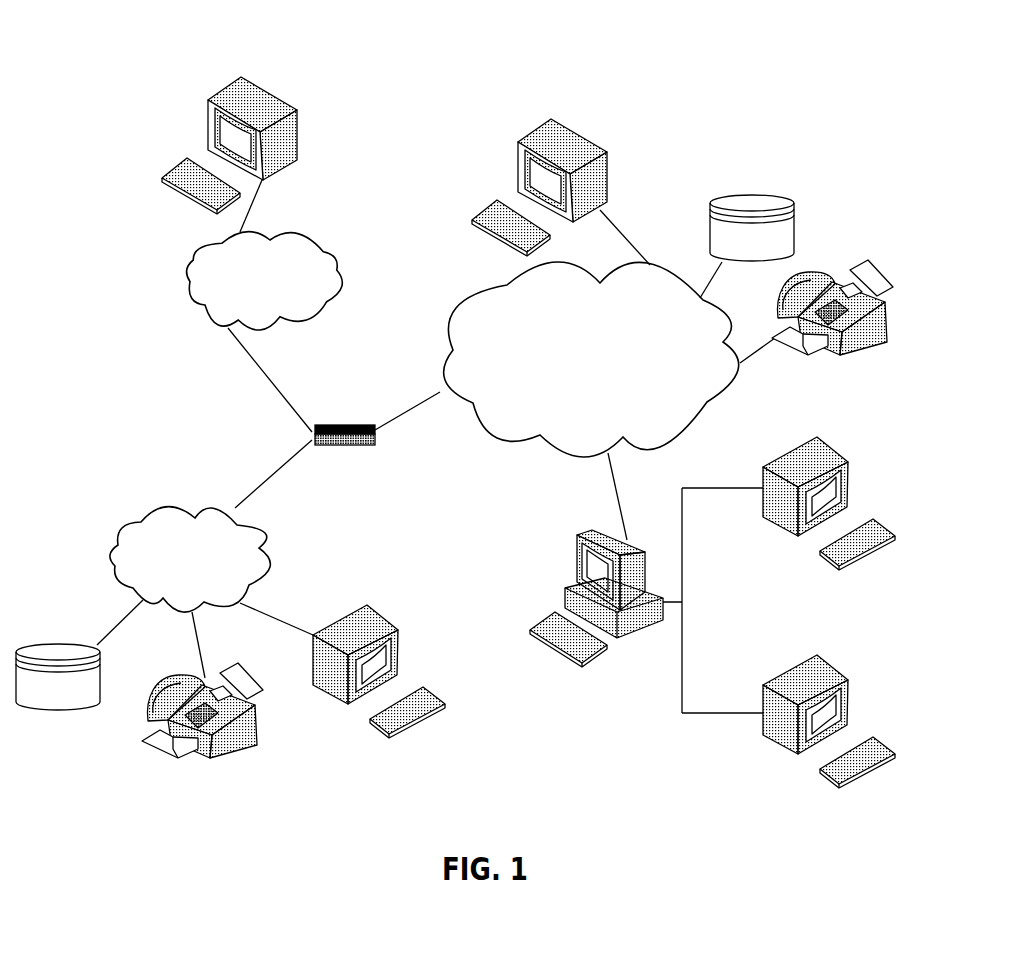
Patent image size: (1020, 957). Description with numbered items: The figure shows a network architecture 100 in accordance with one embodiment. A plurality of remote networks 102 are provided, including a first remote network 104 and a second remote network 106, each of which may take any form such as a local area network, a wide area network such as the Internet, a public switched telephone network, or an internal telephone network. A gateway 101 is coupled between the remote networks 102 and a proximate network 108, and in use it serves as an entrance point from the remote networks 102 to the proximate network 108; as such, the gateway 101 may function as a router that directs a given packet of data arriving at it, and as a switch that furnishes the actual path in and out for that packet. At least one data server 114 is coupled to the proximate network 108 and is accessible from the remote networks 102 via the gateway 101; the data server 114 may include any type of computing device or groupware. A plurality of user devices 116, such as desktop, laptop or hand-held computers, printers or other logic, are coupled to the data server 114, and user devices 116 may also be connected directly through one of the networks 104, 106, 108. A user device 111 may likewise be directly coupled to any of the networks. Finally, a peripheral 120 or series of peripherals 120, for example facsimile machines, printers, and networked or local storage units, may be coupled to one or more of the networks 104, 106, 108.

The architecture 100 is at (138, 58).
The gateway 101 is at (330, 422).
The remote networks 102 is at (165, 345).
The first remote network 104 is at (118, 530).
The second remote network 106 is at (337, 252).
The proximate network 108 is at (693, 428).
The user device 111 is at (605, 153).
The data server 114 is at (577, 550).
The user devices 116 is at (297, 120).
The peripheral 120 is at (793, 202).